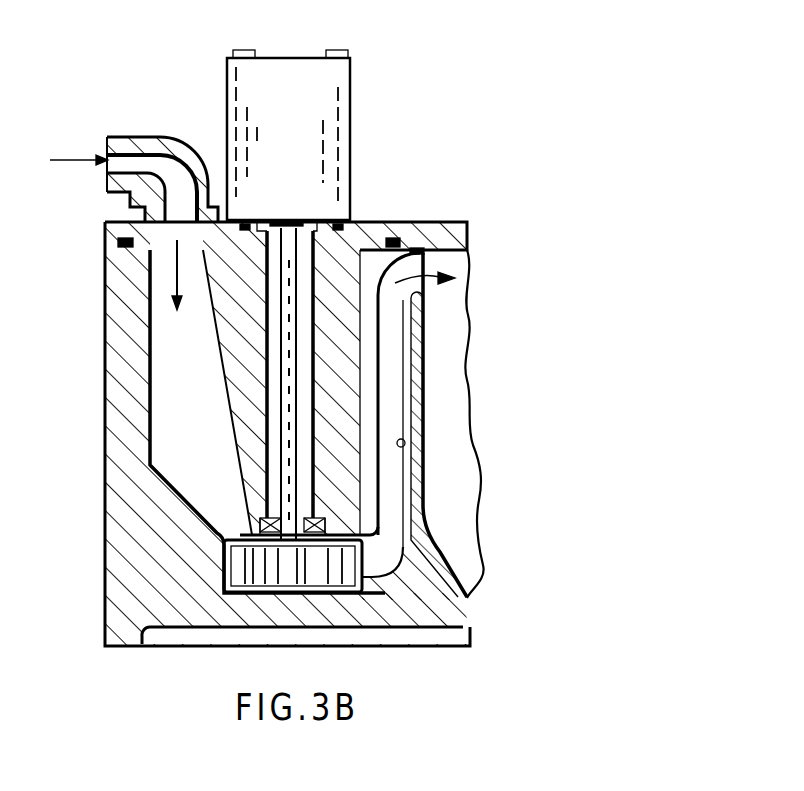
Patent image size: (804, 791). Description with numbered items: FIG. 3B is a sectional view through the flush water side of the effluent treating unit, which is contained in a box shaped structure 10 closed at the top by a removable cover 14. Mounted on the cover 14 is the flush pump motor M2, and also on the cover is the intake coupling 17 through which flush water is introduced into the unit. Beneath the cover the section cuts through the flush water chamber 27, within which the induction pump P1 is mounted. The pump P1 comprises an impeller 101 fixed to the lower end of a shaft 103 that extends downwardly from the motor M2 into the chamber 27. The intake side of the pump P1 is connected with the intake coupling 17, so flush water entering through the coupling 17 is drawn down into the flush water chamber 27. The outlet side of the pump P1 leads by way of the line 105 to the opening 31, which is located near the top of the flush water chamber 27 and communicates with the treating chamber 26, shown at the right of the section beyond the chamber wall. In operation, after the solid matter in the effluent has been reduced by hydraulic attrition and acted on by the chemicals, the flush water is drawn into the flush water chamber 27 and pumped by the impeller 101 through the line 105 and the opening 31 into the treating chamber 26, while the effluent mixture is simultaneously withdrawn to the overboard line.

The box shaped structure 10 is at (98, 512).
The intake coupling 17 is at (157, 137).
The removable cover 14 is at (118, 243).
The flush water chamber 27 is at (163, 402).
The induction pump P1 is at (228, 520).
The shaft 103 is at (287, 356).
The impeller 101 is at (268, 577).
The line 105 is at (408, 444).
The treating chamber 26 is at (457, 302).
The opening 31 is at (428, 255).
The flush pump motor M2 is at (307, 104).